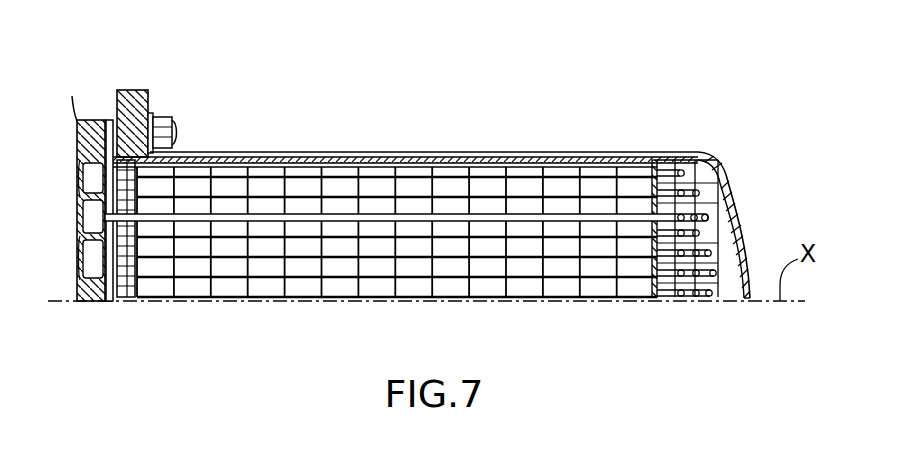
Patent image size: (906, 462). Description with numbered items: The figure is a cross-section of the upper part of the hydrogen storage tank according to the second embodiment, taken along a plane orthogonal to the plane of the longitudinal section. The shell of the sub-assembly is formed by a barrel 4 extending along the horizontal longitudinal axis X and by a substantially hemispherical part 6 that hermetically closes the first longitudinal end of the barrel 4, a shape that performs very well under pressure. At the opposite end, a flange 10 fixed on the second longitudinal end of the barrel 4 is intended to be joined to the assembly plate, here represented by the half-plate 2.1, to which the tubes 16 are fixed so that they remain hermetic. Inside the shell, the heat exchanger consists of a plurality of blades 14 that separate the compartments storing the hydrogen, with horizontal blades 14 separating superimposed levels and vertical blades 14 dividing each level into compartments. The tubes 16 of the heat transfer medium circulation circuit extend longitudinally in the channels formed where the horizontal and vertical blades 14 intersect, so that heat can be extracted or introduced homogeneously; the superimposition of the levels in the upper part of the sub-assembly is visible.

The half-plate 2.1 is at (93, 297).
The barrel 4 is at (455, 150).
The substantially hemispherical part 6 is at (727, 217).
The flange 10 is at (137, 90).
The blades 14 is at (437, 287).
The tubes 16 is at (567, 223).